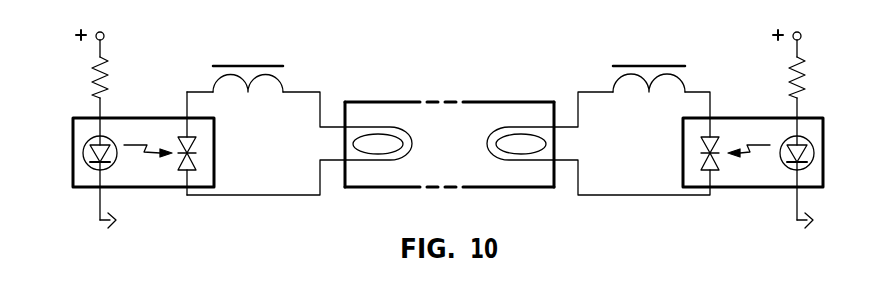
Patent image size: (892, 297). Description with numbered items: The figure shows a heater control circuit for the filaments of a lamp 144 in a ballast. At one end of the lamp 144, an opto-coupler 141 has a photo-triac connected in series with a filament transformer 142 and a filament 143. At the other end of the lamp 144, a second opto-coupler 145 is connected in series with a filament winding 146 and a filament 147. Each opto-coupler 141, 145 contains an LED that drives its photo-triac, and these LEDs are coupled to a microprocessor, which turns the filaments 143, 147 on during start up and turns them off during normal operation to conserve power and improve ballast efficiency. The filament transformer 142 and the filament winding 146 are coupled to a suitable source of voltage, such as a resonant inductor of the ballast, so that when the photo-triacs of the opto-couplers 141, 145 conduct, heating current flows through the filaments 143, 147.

The opto-coupler 141 is at (160, 117).
The filament transformer 142 is at (250, 66).
The filament 143 is at (403, 150).
The lamp 144 is at (512, 102).
The opto-coupler 145 is at (745, 117).
The filament winding 146 is at (642, 66).
The filament 147 is at (493, 137).